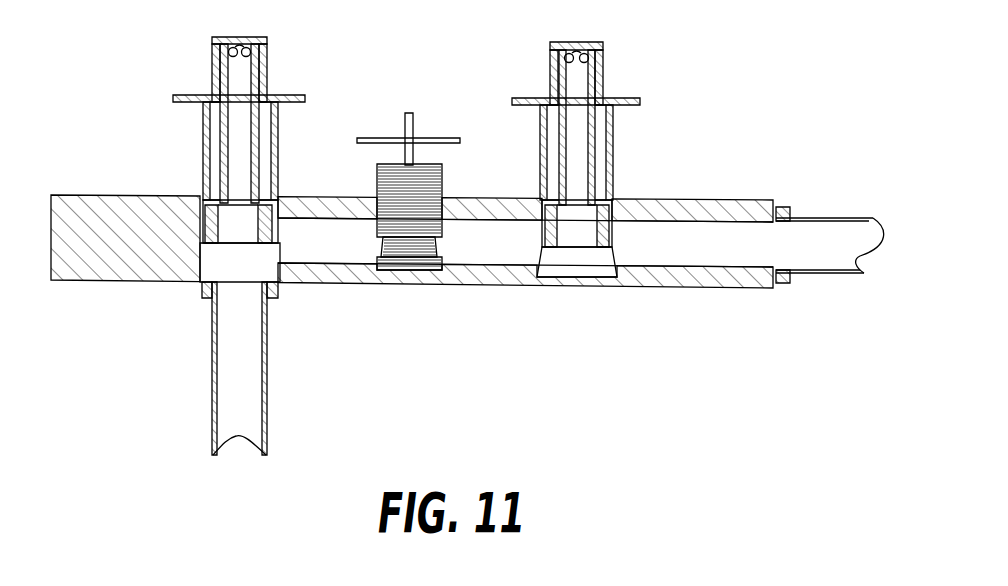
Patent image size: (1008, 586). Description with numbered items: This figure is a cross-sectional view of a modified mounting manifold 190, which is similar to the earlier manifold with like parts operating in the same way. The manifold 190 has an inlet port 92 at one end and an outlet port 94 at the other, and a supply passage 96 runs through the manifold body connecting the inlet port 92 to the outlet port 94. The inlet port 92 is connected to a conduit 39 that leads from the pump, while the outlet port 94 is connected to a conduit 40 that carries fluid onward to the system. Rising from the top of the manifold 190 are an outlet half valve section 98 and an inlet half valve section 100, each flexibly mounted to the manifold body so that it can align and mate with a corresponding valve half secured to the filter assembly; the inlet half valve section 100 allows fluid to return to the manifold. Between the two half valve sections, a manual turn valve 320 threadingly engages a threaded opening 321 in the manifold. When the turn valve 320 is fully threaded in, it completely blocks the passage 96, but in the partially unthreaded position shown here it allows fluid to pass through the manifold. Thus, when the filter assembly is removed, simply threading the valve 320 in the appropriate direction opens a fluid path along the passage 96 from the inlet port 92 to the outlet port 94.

The mounting manifold 190 is at (734, 194).
The supply passage 96 is at (322, 242).
The outlet half valve section 98 is at (203, 150).
The inlet port 92 is at (205, 297).
The conduit 39 is at (267, 409).
The manual turn valve 320 is at (413, 115).
The threaded opening 321 is at (422, 268).
The inlet half valve section 100 is at (613, 165).
The conduit 40 is at (828, 217).
The outlet port 94 is at (790, 285).